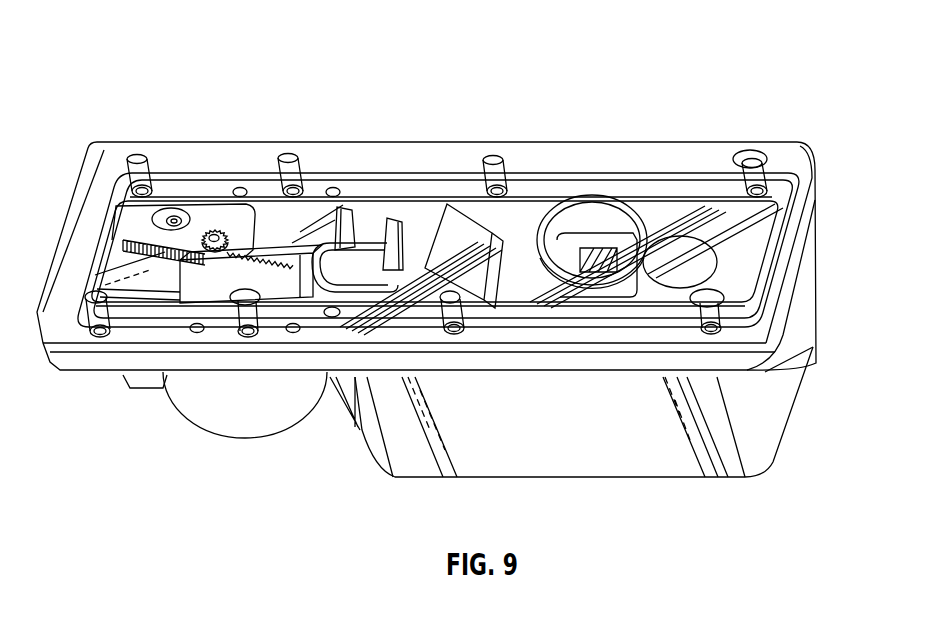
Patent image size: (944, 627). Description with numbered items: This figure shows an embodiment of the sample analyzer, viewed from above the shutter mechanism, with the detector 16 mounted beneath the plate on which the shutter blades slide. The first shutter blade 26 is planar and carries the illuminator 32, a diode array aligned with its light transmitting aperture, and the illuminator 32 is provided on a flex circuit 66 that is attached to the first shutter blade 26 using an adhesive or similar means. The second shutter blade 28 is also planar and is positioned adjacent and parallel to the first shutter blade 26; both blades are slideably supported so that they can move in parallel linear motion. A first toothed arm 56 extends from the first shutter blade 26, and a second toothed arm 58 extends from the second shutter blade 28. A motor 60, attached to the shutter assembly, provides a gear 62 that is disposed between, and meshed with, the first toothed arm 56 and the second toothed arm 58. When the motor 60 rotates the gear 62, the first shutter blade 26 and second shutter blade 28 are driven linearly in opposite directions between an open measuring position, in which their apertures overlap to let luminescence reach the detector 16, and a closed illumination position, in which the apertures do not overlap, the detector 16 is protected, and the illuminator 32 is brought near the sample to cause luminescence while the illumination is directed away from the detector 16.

The detector 16 is at (653, 478).
The first shutter blade 26 is at (632, 305).
The second shutter blade 28 is at (345, 207).
The illuminator 32 is at (598, 240).
The first toothed arm 56 is at (268, 268).
The second toothed arm 58 is at (233, 208).
The motor 60 is at (257, 423).
The gear 62 is at (222, 258).
The flex circuit 66 is at (392, 216).